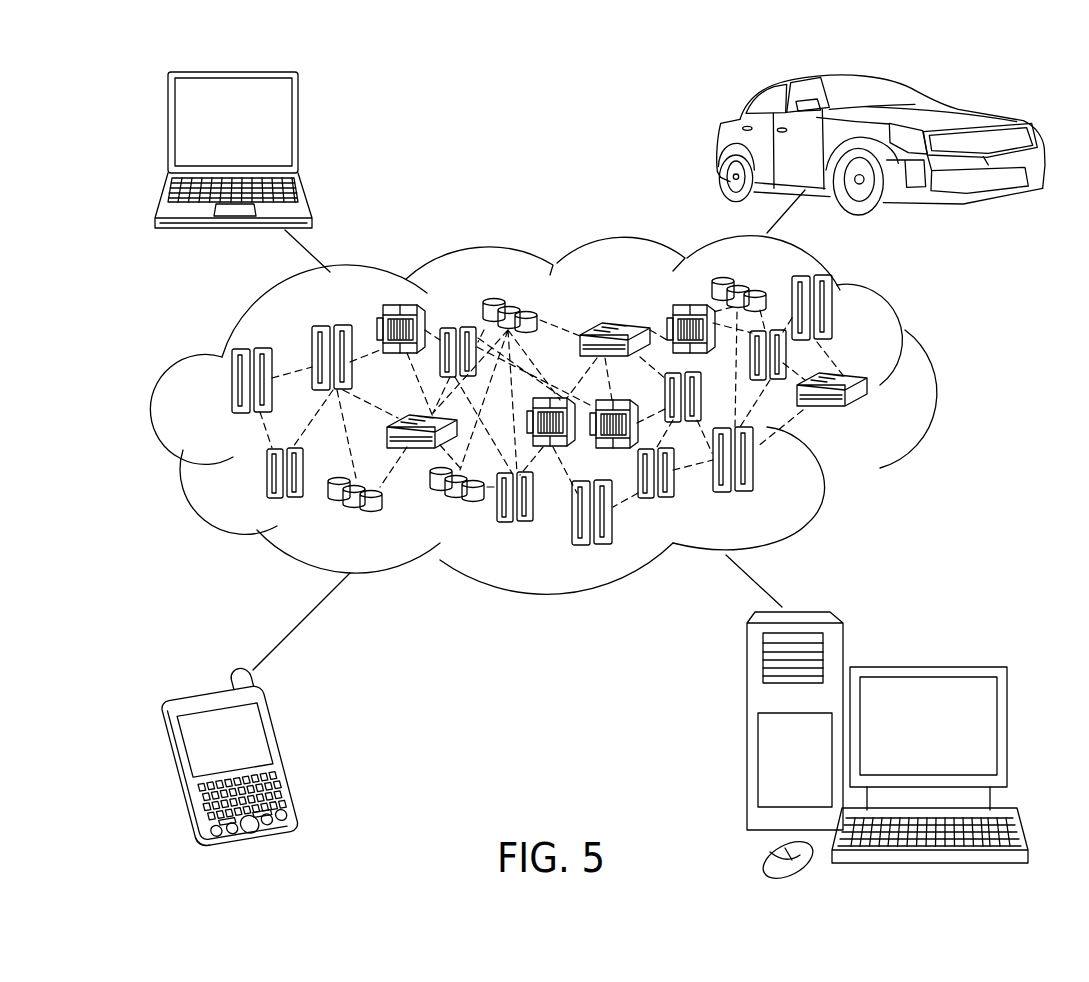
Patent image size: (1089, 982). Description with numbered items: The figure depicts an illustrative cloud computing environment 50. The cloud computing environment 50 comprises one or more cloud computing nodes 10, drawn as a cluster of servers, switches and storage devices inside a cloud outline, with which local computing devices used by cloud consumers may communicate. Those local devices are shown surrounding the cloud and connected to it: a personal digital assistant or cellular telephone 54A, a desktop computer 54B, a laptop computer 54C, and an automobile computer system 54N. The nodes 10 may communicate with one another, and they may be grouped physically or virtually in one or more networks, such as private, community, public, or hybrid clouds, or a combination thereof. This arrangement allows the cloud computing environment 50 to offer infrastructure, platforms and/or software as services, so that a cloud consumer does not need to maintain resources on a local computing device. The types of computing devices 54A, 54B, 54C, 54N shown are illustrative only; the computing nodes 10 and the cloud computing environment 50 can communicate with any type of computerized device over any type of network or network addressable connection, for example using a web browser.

The cloud computing node 10 is at (872, 419).
The cloud computing environment 50 is at (927, 390).
The personal digital assistant or cellular telephone 54A is at (288, 752).
The desktop computer 54B is at (925, 667).
The laptop computer 54C is at (298, 130).
The automobile computer system 54N is at (715, 145).